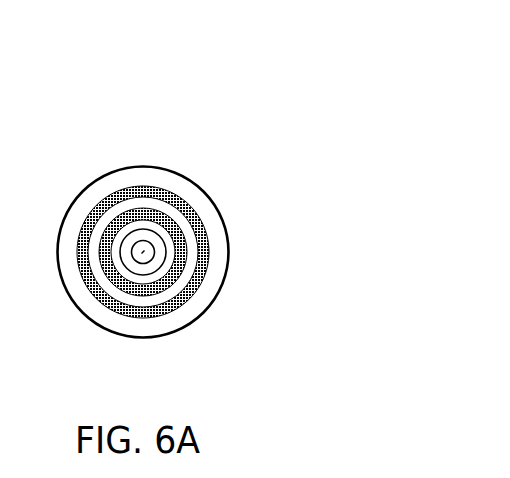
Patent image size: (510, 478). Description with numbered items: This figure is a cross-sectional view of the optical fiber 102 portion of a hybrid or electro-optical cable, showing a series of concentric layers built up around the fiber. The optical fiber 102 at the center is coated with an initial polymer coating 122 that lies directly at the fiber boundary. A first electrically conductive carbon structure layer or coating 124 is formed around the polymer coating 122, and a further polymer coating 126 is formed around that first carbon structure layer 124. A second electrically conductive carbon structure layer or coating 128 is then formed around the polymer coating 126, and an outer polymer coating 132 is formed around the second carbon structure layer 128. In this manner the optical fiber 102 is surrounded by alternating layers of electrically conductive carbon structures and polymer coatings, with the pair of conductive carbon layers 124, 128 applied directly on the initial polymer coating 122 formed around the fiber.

The optical fiber 102 is at (383, 141).
The polymer coating 122 is at (168, 238).
The first electrically conductive carbon structure layer or coating 124 is at (187, 254).
The polymer coating 126 is at (189, 283).
The second electrically conductive carbon structure layer or coating 128 is at (187, 300).
The polymer coating 132 is at (175, 333).